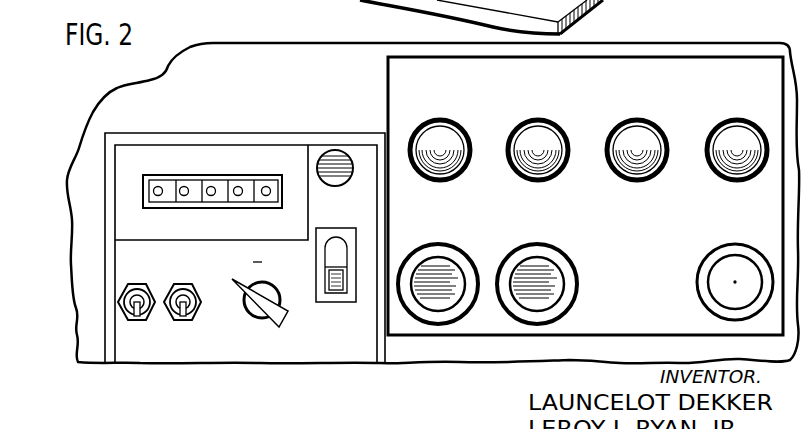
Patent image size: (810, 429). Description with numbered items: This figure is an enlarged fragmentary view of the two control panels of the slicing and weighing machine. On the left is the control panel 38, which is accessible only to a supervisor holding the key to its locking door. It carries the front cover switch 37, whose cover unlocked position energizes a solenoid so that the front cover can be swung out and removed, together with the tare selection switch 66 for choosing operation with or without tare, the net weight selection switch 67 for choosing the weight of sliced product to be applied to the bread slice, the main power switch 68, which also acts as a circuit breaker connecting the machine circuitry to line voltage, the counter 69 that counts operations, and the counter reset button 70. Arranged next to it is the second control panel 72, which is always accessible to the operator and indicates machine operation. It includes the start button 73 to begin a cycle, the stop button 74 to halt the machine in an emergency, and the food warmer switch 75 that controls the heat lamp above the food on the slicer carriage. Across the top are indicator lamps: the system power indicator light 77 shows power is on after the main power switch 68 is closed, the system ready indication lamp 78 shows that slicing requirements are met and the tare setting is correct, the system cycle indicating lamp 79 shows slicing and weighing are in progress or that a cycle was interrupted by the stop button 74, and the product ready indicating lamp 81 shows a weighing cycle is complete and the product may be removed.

The front cover switch 37 is at (124, 302).
The control panel 38 is at (120, 243).
The tare selection switch 66 is at (188, 312).
The net weight selection switch 67 is at (266, 320).
The main power switch 68 is at (341, 285).
The counter 69 is at (244, 175).
The counter reset button 70 is at (331, 151).
The second control panel 72 is at (687, 63).
The start button 73 is at (546, 306).
The stop button 74 is at (443, 306).
The food warmer switch 75 is at (723, 290).
The system power indicator light 77 is at (413, 140).
The system ready indication lamp 78 is at (508, 138).
The system cycle indicating lamp 79 is at (610, 128).
The product ready indicating lamp 81 is at (710, 128).